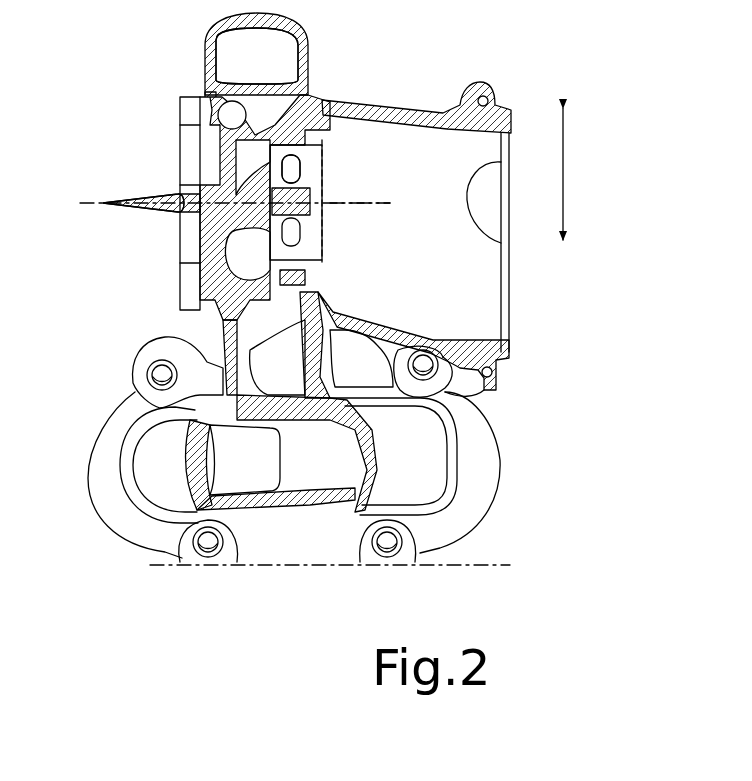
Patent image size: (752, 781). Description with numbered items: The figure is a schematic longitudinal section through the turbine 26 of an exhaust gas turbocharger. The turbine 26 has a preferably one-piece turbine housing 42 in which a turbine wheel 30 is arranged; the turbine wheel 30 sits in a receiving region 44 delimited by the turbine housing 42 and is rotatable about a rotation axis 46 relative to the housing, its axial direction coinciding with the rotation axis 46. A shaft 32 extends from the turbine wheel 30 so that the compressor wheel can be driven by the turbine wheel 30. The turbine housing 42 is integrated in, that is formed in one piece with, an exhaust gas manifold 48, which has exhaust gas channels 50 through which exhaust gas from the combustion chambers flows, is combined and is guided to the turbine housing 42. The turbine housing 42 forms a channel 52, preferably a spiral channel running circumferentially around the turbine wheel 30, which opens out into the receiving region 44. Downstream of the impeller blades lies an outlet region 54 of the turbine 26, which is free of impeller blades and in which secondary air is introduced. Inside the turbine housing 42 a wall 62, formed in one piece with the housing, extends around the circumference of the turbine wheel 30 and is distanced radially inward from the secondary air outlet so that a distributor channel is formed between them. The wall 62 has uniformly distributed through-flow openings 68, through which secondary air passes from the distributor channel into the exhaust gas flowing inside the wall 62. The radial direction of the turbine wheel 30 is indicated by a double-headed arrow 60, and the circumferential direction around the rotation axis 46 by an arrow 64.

The turbine 26 is at (496, 84).
The turbine wheel 30 is at (186, 186).
The shaft 32 is at (140, 212).
The turbine housing 42 is at (315, 50).
The receiving region 44 is at (250, 150).
The rotation axis 46 is at (365, 203).
The exhaust gas manifold 48 is at (425, 532).
The exhaust gas channel 50 is at (335, 462).
The channel 52 is at (212, 57).
The outlet region 54 is at (307, 162).
The double-headed arrow 60 is at (565, 172).
The wall 62 is at (322, 248).
The arrow 64 is at (480, 245).
The through-flow openings 68 is at (222, 152).